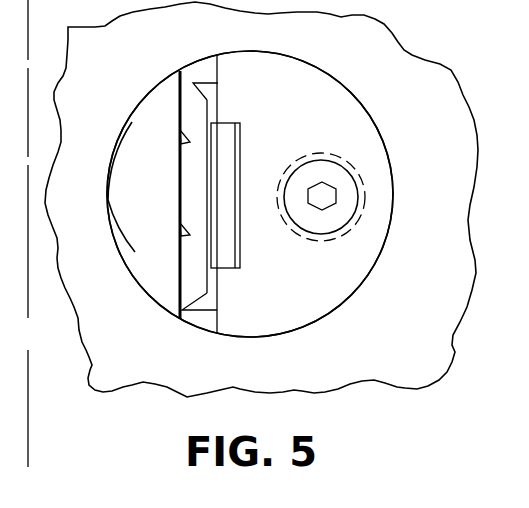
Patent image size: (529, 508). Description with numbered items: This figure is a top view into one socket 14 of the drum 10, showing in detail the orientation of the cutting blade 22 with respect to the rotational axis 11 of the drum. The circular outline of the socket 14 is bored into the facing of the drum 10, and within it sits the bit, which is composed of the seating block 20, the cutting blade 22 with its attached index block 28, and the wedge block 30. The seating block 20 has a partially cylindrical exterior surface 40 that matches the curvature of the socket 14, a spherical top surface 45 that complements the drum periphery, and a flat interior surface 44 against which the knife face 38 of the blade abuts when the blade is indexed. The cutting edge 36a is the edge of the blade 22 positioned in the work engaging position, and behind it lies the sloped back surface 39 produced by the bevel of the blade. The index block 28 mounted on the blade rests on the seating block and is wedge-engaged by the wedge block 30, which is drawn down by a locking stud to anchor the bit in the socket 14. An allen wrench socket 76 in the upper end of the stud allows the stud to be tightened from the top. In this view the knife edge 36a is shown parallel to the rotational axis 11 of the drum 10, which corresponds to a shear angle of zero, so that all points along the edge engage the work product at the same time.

The drum 10 is at (437, 88).
The rotational axis 11 is at (28, 450).
The socket 14 is at (362, 105).
The seating block 20 is at (147, 218).
The cutting blade 22 is at (187, 272).
The index block 28 is at (230, 162).
The wedge block 30 is at (302, 80).
The cutting edge 36a is at (180, 46).
The knife face 38 is at (178, 162).
The back surface 39 is at (198, 128).
The exterior surface 40 is at (132, 122).
The interior surface 44 is at (180, 140).
The top surface 45 is at (135, 252).
The allen wrench socket 76 is at (322, 203).